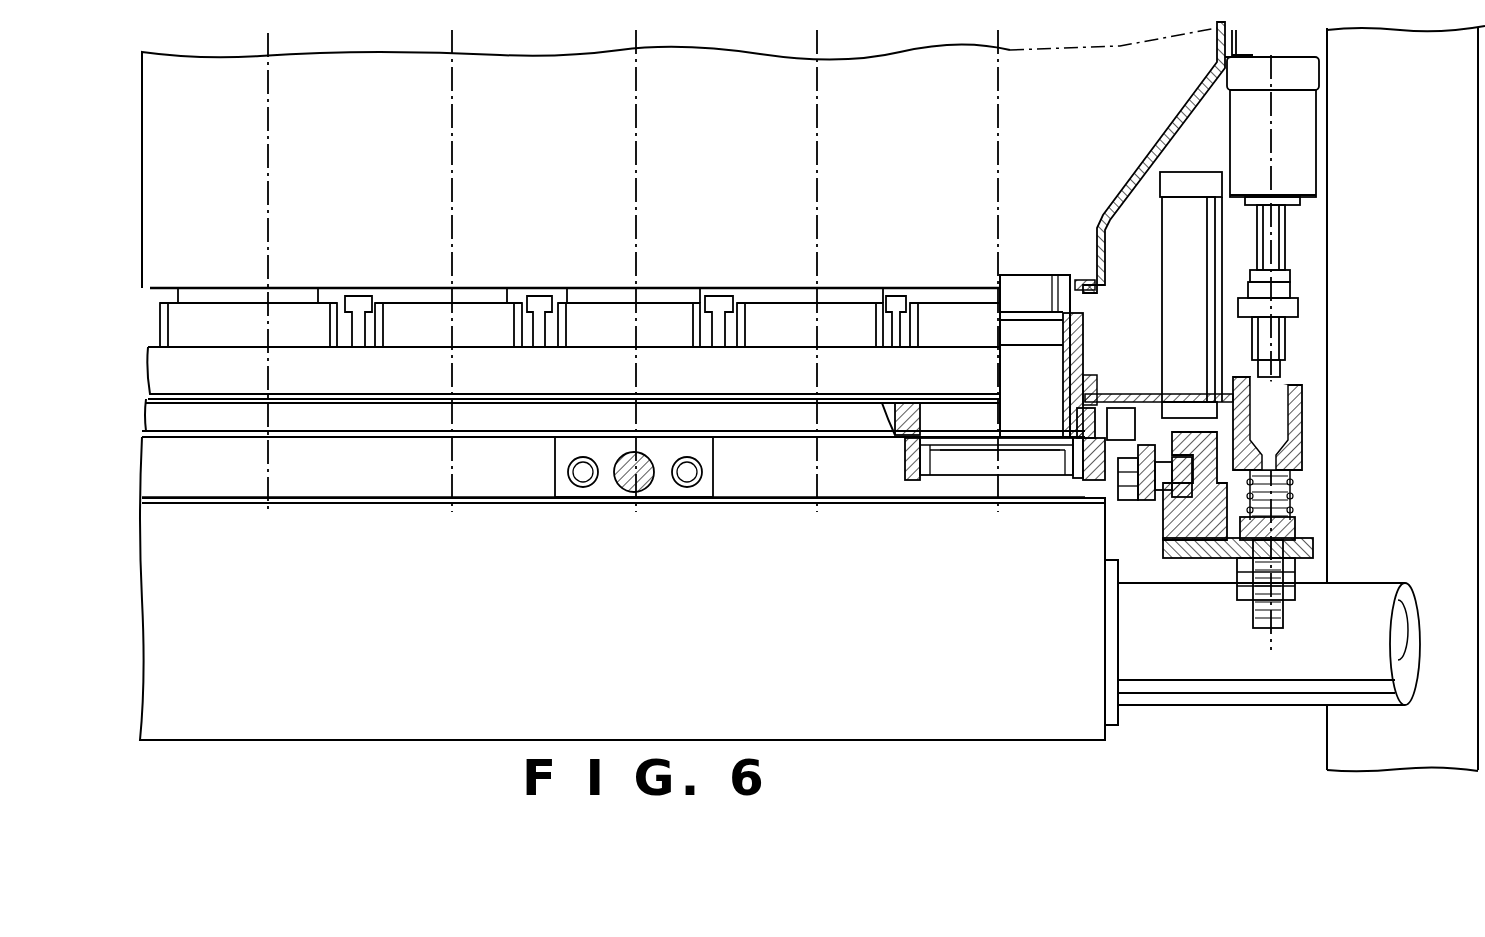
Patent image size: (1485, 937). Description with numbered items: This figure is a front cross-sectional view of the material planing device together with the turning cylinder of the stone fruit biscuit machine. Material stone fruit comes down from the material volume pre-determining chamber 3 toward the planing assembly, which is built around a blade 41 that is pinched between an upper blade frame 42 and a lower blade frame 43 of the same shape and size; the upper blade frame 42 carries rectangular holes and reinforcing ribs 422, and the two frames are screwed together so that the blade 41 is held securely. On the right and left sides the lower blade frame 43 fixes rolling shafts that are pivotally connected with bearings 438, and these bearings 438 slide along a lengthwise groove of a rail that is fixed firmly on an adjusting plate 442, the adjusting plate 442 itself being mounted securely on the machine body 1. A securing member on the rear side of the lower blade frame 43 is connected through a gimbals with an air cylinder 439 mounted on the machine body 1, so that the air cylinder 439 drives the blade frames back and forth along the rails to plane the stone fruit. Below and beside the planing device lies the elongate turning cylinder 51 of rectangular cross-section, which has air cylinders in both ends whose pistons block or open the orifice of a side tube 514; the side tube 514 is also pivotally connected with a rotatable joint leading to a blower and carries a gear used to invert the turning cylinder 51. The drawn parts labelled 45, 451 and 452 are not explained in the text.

The machine body 1 is at (1360, 735).
The material volume pre-determining chamber 3 is at (1113, 210).
The blade 41 is at (1062, 470).
The upper blade frame 42 is at (1096, 482).
The lower blade frame 43 is at (1150, 503).
The holder block 45 is at (1040, 420).
The turning cylinder 51 is at (905, 715).
The reinforcing rib 422 is at (905, 440).
The bearing 438 is at (1180, 555).
The air cylinder 439 is at (648, 492).
The adjusting plate 442 is at (1226, 560).
The rail 451 is at (1020, 460).
The slot 452 is at (958, 450).
The side tube 514 is at (1165, 690).